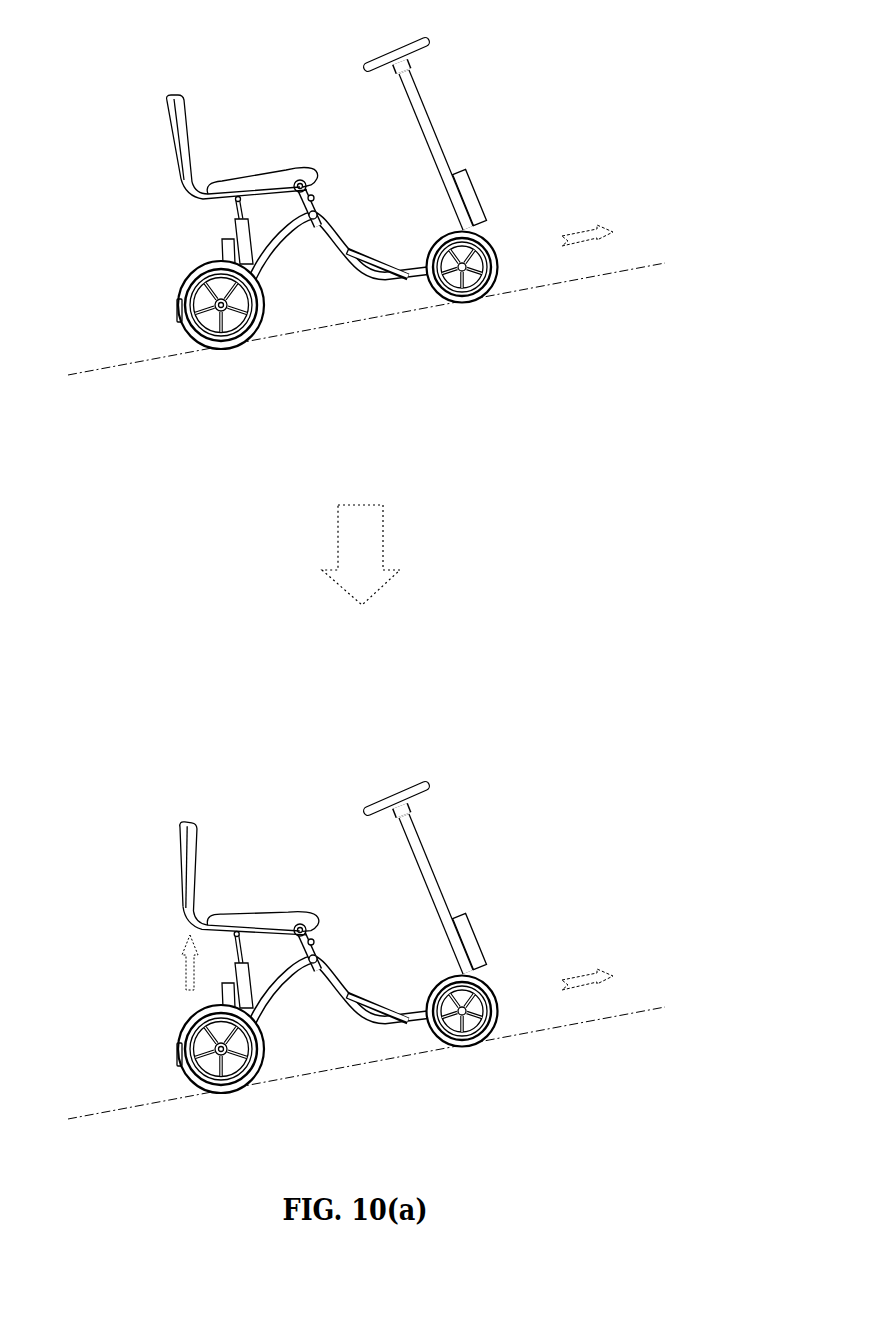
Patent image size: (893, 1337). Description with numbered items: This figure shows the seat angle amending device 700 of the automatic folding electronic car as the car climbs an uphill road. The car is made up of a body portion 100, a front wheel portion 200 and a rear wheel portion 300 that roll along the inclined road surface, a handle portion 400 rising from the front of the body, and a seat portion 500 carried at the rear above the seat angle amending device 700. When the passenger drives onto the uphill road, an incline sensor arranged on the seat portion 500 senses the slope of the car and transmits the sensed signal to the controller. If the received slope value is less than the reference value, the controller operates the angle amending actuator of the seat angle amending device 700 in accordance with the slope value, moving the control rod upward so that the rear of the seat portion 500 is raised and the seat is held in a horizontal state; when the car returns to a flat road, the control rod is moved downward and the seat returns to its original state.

The body portion 100 is at (348, 292).
The front wheel portion 200 is at (497, 238).
The rear wheel portion 300 is at (161, 294).
The handle portion 400 is at (455, 122).
The seat portion 500 is at (242, 131).
The seat angle amending device 700 is at (193, 234).